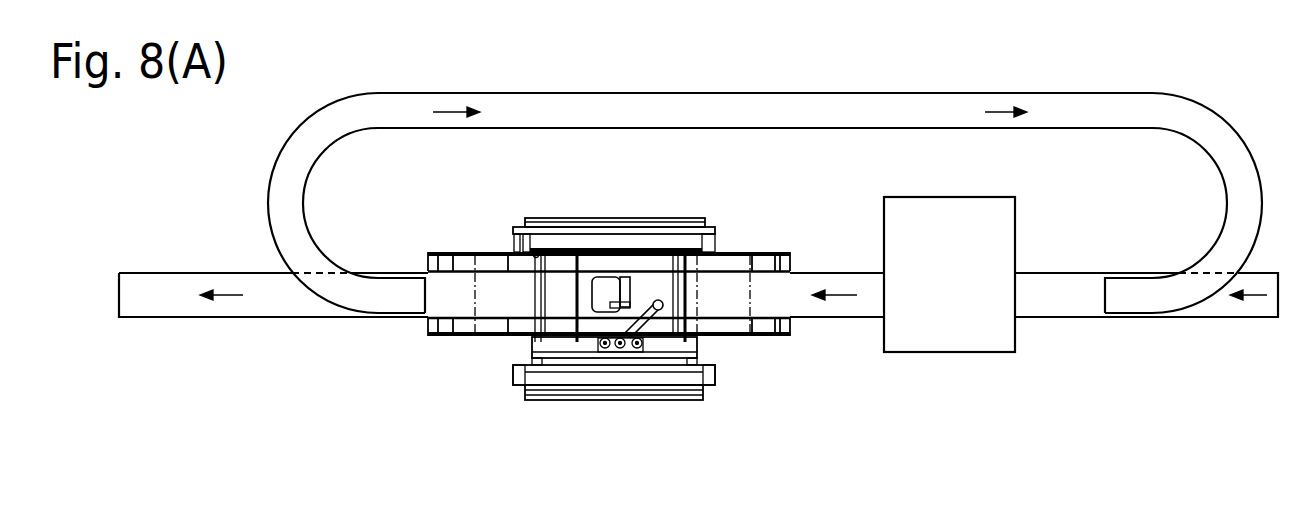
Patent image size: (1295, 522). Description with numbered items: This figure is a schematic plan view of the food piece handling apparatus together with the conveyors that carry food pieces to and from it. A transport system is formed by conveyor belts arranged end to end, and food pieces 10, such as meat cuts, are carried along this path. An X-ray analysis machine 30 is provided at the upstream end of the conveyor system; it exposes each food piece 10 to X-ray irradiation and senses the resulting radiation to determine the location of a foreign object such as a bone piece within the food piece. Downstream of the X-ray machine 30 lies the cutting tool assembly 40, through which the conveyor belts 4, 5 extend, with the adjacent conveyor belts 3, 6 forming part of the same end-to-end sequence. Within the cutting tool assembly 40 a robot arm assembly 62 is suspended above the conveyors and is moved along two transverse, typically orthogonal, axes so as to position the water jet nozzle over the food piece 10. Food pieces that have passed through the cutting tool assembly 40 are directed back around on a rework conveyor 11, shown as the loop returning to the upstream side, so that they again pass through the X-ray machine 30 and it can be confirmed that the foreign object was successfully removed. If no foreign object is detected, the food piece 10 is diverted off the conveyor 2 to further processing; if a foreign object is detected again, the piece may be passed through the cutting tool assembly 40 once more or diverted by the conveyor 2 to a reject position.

The rework conveyor 11 is at (1077, 102).
The conveyor belt 2 is at (843, 305).
The X-ray analysis machine 30 is at (1014, 374).
The conveyor belt 6 is at (453, 282).
The conveyor belt 3 is at (735, 305).
The cutting tool assembly 40 is at (562, 416).
The conveyor belt 4 is at (658, 282).
The conveyor belt 5 is at (560, 282).
The food piece 10 is at (600, 297).
The robot arm assembly 62 is at (650, 335).